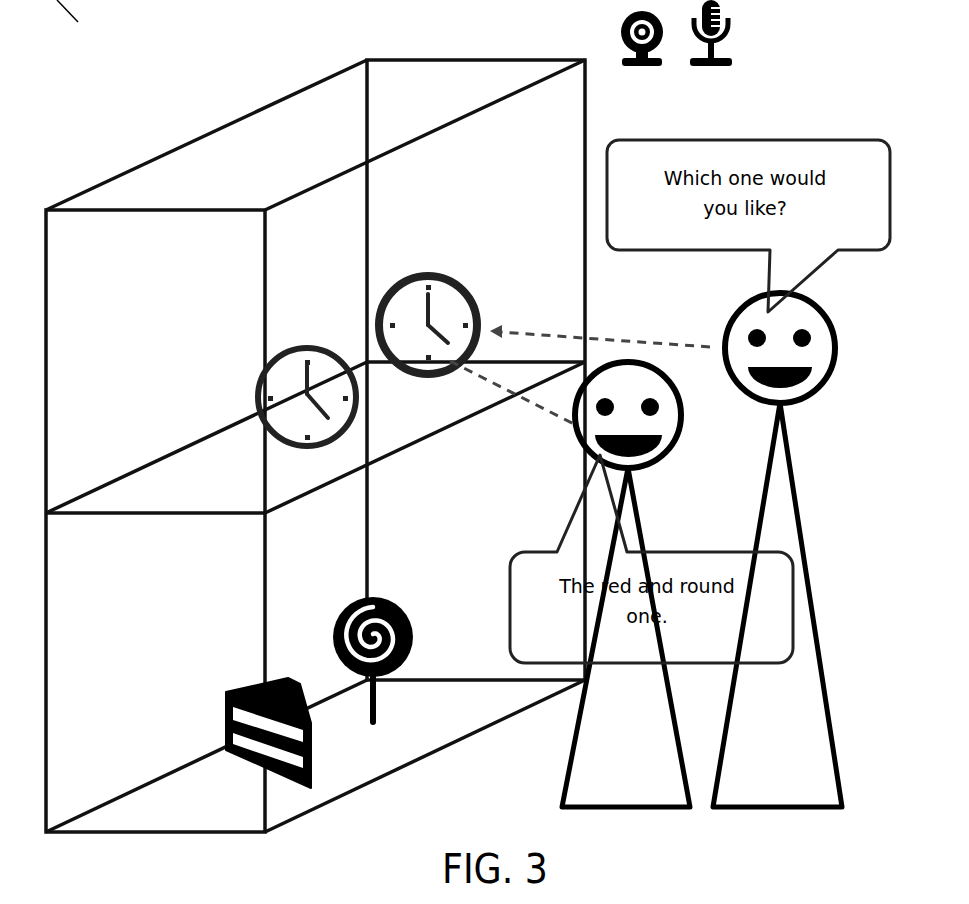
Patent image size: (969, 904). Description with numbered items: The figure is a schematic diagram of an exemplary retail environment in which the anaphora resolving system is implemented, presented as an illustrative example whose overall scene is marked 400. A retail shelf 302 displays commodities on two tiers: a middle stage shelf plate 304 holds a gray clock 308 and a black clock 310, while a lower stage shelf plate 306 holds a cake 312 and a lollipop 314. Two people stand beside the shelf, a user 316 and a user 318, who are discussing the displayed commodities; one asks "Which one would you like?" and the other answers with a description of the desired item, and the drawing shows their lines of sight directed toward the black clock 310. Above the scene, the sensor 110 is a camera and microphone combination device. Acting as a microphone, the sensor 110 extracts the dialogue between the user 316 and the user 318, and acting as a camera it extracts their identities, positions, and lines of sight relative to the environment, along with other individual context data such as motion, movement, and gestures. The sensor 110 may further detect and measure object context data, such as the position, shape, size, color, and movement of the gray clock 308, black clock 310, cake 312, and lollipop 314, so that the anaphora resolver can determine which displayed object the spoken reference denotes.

The sensor 110 is at (688, 90).
The retail shelf 302 is at (68, 240).
The middle stage shelf plate 304 is at (162, 512).
The lower stage shelf plate 306 is at (152, 831).
The gray clock 308 is at (327, 481).
The black clock 310 is at (407, 403).
The cake 312 is at (306, 807).
The lollipop 314 is at (357, 752).
The user 316 is at (646, 849).
The user 318 is at (762, 844).
The environment / scene 400 is at (65, 894).